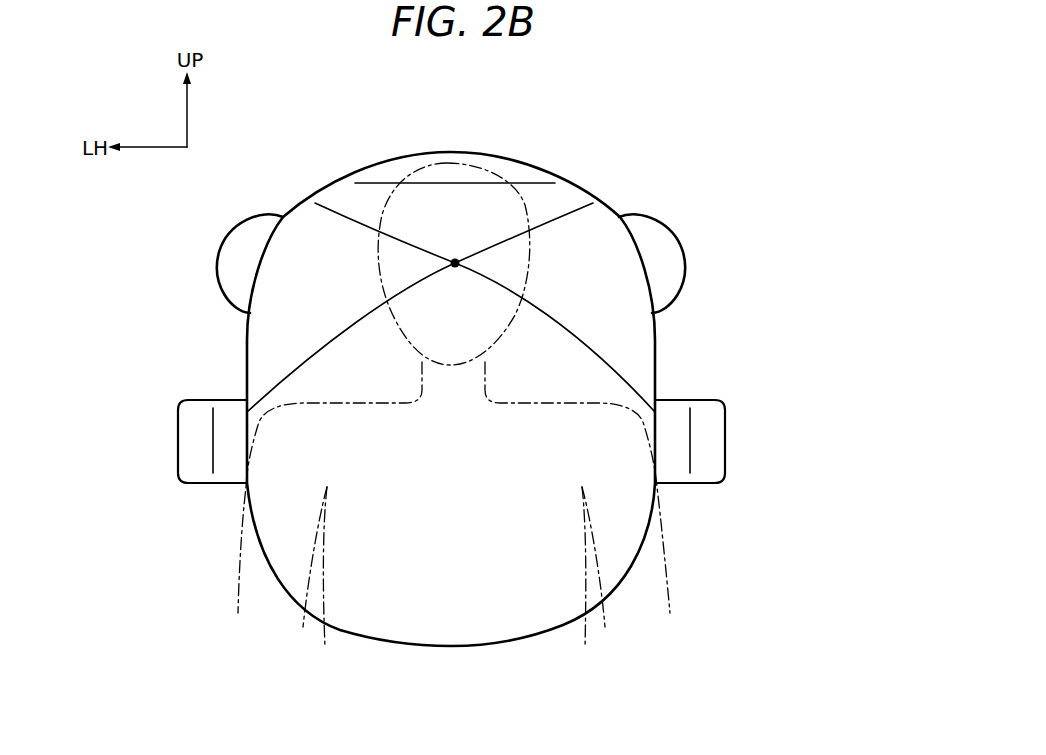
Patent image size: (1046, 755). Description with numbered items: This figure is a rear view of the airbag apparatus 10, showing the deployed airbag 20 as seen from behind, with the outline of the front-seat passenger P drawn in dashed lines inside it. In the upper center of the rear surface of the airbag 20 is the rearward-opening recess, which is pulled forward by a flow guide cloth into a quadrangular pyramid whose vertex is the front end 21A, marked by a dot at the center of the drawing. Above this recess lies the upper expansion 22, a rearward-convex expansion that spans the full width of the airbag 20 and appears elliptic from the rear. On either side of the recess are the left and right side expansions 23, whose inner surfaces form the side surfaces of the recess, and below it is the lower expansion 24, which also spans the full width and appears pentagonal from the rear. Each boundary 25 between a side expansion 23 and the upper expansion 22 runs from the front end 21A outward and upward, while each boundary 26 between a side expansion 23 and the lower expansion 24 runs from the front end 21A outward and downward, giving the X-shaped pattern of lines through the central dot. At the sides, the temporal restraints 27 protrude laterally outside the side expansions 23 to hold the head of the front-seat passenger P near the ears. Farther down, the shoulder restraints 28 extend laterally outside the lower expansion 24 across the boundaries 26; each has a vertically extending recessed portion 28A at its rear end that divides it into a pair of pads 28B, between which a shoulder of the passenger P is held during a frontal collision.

The airbag apparatus 10 is at (684, 133).
The airbag 20 is at (657, 337).
The front end of the recess 21A is at (453, 262).
The upper expansion 22 is at (535, 200).
The side expansion 23 is at (267, 355).
The lower expansion 24 is at (462, 568).
The boundary 25 is at (325, 210).
The boundary 26 is at (342, 330).
The temporal restraint 27 is at (220, 240).
The shoulder restraint 28 is at (177, 455).
The recessed portion 28A is at (214, 443).
The pad 28B is at (229, 411).
The front-seat passenger P is at (497, 185).